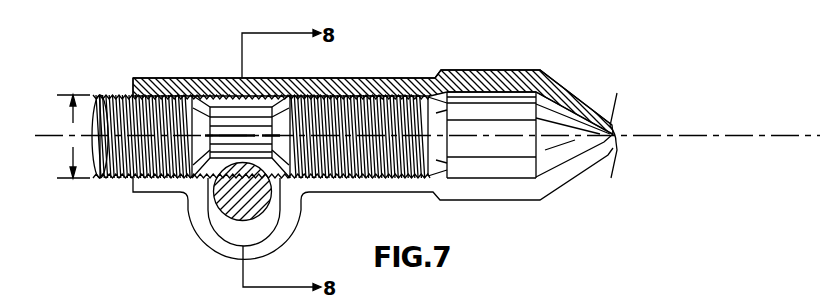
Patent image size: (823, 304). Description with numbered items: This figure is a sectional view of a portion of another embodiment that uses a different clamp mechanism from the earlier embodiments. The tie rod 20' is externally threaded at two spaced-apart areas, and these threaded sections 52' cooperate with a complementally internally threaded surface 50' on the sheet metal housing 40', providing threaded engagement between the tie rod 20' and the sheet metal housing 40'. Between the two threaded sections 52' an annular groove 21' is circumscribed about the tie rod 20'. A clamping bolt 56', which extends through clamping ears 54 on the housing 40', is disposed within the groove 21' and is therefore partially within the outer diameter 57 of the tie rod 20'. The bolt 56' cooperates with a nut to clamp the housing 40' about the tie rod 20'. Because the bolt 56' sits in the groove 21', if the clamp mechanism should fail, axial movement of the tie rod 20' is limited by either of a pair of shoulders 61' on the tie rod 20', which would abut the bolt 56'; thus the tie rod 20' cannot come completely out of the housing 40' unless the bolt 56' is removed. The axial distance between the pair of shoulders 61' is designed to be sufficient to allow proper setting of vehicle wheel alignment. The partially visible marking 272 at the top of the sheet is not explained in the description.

The tie rod 20' is at (246, 161).
The annular groove 21' is at (241, 93).
The sheet metal housing 40' is at (375, 91).
The internally threaded surface 50' is at (373, 203).
The threaded section 52' is at (144, 161).
The clamping ears 54 is at (203, 230).
The clamping bolt 56' is at (274, 212).
The outer diameter 57 is at (73, 125).
The shoulders 61' is at (260, 72).
The reference numeral (cut off) 272 is at (325, 5).